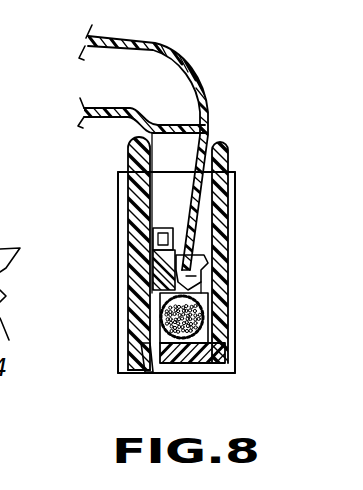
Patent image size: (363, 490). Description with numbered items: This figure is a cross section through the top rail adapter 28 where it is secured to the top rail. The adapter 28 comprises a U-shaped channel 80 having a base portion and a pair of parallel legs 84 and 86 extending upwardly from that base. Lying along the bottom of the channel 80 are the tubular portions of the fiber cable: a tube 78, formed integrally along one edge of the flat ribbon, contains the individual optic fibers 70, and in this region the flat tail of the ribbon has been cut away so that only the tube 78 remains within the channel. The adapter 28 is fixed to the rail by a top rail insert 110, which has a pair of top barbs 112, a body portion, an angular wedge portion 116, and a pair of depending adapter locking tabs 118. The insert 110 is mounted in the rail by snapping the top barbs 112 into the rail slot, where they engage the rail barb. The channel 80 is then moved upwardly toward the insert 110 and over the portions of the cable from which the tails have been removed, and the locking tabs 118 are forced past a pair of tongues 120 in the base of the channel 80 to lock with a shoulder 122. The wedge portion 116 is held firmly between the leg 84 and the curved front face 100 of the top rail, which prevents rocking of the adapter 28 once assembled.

The top rail adapter 28 is at (264, 233).
The optic fibers 70 is at (203, 318).
The tube 78 is at (208, 290).
The U-shaped channel 80 is at (240, 348).
The leg 84 is at (228, 212).
The leg 86 is at (128, 203).
The curved front face 100 is at (212, 188).
The top rail insert 110 is at (153, 305).
The top barbs 112 is at (153, 239).
The angular wedge portion 116 is at (208, 264).
The adapter locking tabs 118 is at (142, 374).
The tongues 120 is at (173, 370).
The shoulder 122 is at (137, 366).